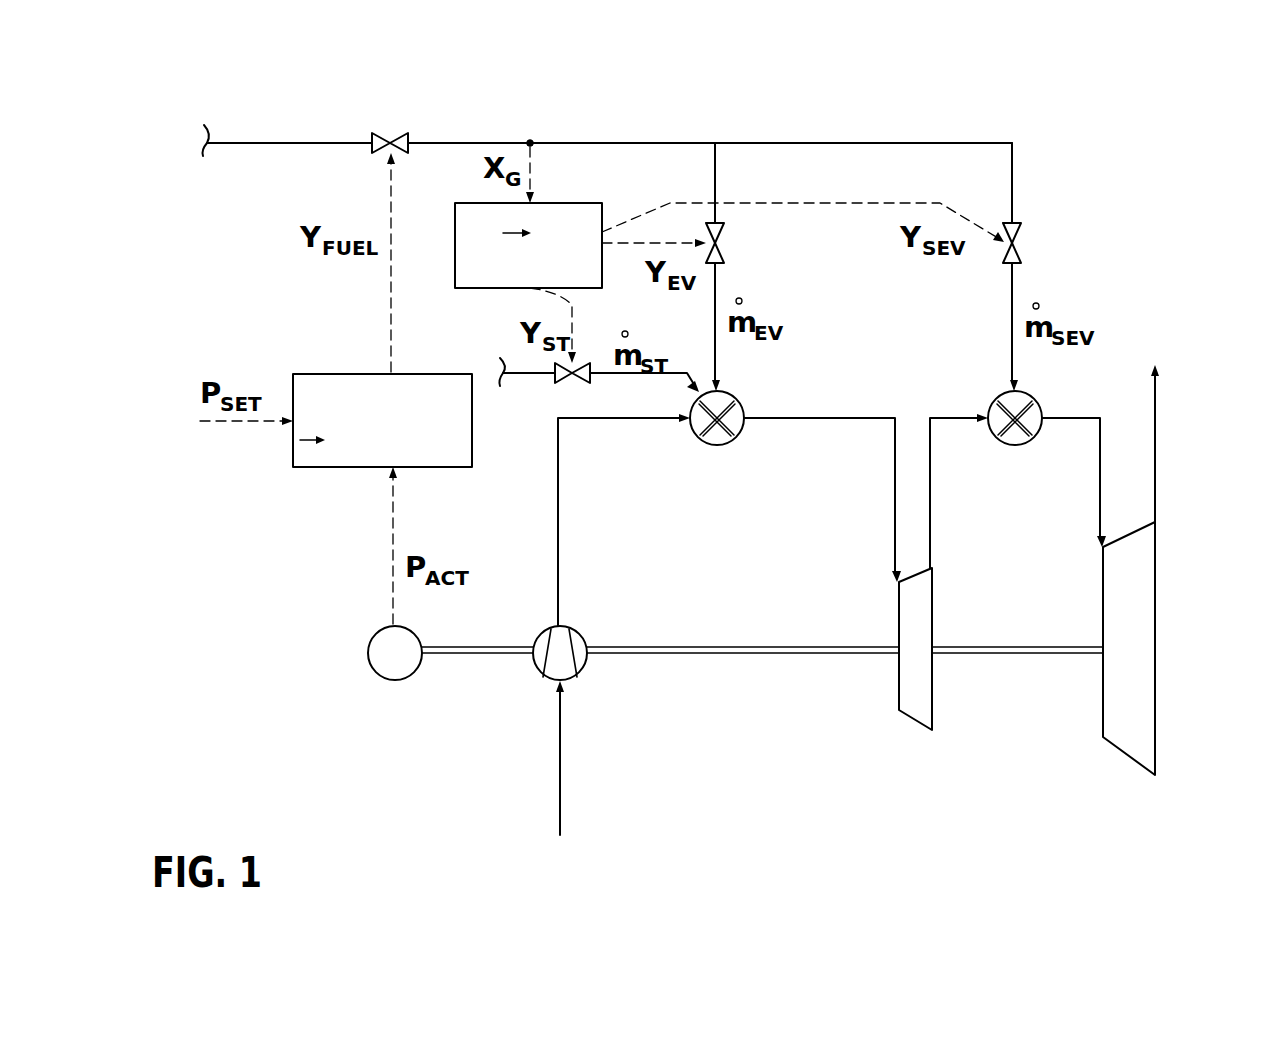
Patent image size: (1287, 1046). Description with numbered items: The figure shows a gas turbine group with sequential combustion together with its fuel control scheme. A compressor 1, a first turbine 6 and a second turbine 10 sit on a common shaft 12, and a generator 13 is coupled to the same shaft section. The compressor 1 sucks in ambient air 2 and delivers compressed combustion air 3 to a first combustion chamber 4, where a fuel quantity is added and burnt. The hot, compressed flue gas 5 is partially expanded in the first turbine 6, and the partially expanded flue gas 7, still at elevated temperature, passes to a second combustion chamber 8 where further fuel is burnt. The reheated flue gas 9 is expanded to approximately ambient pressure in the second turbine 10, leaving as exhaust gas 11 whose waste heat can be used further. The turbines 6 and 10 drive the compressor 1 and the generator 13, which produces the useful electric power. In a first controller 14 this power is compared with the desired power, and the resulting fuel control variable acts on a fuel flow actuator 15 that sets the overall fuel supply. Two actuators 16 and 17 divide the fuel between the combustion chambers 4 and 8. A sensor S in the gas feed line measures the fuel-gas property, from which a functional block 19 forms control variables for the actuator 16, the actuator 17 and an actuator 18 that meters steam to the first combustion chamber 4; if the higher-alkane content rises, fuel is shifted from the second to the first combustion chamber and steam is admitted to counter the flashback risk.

The compressor 1 is at (551, 671).
The ambient air 2 is at (560, 741).
The compressed combustion air 3 is at (657, 421).
The first combustion chamber 4 is at (717, 446).
The hot compressed flue gas 5 is at (785, 421).
The first turbine 6 is at (905, 667).
The partially expanded flue gas 7 is at (953, 420).
The second combustion chamber 8 is at (1015, 446).
The reheated flue gas 9 is at (1101, 475).
The second turbine 10 is at (1148, 667).
The exhaust gas 11 is at (1155, 413).
The common shaft 12 is at (792, 654).
The generator 13 is at (395, 682).
The first controller 14 is at (463, 467).
The fuel flow actuator 15 is at (392, 138).
The actuator 16 is at (717, 240).
The actuator 17 is at (1020, 226).
The actuator 18 is at (553, 385).
The functional block 19 is at (586, 203).
The sensor S is at (528, 140).